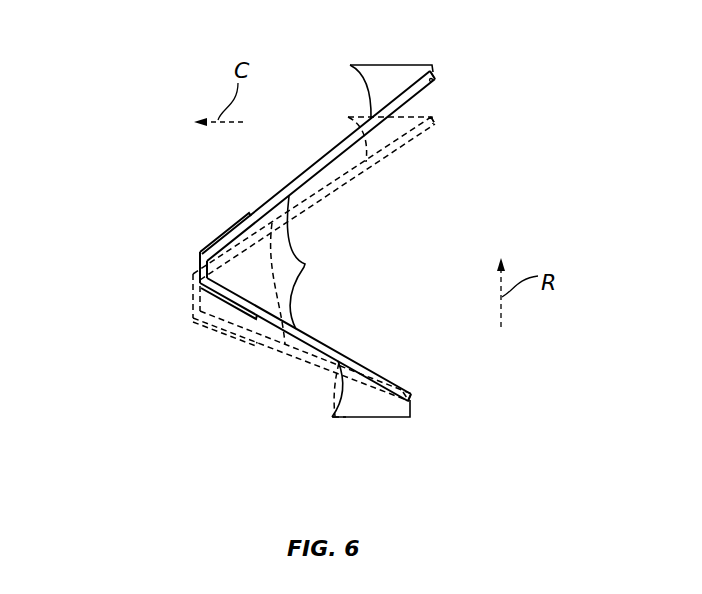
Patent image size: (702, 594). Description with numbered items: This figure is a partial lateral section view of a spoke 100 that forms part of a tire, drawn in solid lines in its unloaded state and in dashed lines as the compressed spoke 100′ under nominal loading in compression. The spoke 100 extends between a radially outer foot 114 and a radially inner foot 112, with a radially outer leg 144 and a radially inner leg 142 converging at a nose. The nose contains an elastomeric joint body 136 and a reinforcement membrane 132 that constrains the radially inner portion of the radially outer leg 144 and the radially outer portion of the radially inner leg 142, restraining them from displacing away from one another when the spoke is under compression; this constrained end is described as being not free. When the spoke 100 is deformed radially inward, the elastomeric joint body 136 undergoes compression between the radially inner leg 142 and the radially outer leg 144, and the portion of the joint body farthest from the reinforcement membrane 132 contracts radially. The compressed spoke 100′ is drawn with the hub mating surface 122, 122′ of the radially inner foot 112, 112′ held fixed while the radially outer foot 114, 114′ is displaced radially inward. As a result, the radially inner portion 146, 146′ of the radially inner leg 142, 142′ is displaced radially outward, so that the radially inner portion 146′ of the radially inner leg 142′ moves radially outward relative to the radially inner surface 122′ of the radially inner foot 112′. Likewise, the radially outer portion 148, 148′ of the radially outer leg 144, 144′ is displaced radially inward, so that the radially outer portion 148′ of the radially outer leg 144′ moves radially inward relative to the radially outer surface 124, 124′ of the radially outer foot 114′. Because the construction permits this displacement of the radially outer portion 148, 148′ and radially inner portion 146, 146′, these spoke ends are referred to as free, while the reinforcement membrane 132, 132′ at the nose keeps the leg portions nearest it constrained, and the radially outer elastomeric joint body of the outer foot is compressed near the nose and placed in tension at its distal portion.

The spoke 100 is at (150, 42).
The compressed spoke 100′ is at (168, 292).
The radially inner foot 112 is at (373, 408).
The radially inner foot in compressed state 112′ is at (338, 387).
The radially outer foot 114 is at (375, 80).
The radially outer foot in compressed state 114′ is at (383, 147).
The hub mating surface 122 is at (390, 420).
The hub mating surface in compressed state 122′ is at (338, 418).
The radially outer surface 124 is at (400, 64).
The radially outer surface in compressed state 124′ is at (420, 117).
The reinforcement membrane 132 is at (238, 222).
The reinforcement membrane in compressed state 132′ is at (220, 327).
The elastomeric joint body 136 is at (290, 257).
The radially inner leg 142 is at (328, 346).
The radially inner leg in compressed state 142′ is at (313, 360).
The radially outer leg 144 is at (323, 162).
The radially outer leg in compressed state 144′ is at (337, 184).
The radially inner portion of the radially inner leg 146 is at (413, 405).
The radially inner portion of the radially inner leg in compressed state 146′ is at (412, 397).
The radially outer portion of the radially outer leg 148 is at (436, 80).
The radially outer portion of the radially outer leg in compressed state 148′ is at (427, 130).